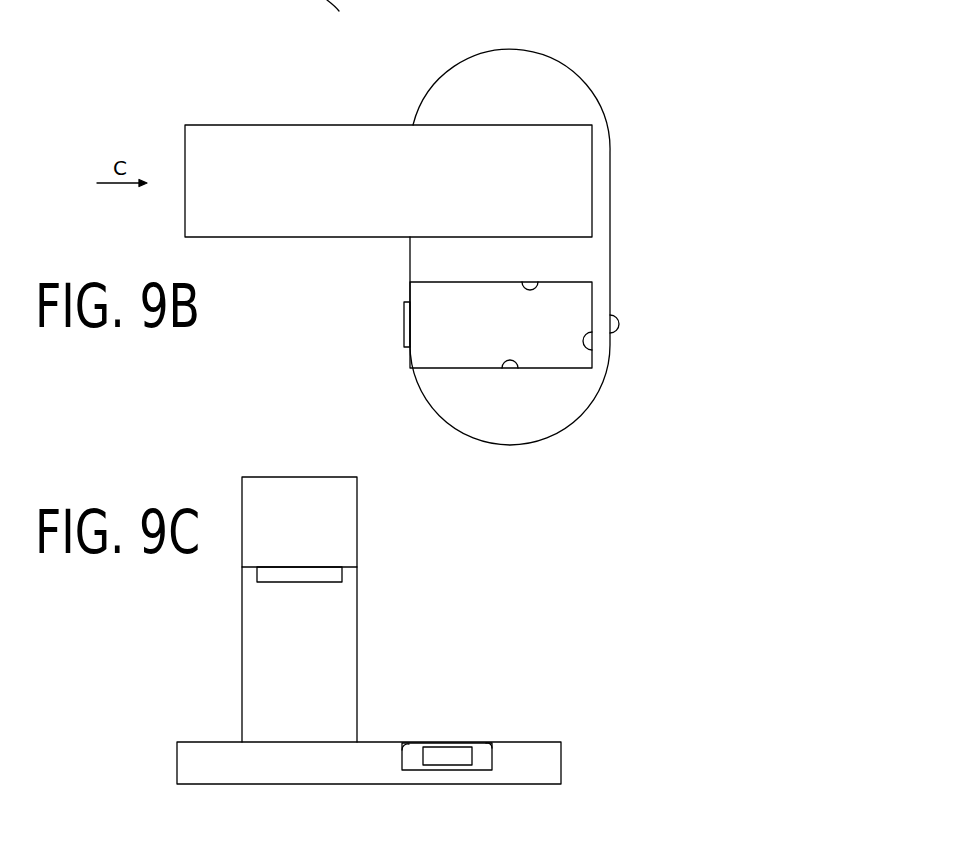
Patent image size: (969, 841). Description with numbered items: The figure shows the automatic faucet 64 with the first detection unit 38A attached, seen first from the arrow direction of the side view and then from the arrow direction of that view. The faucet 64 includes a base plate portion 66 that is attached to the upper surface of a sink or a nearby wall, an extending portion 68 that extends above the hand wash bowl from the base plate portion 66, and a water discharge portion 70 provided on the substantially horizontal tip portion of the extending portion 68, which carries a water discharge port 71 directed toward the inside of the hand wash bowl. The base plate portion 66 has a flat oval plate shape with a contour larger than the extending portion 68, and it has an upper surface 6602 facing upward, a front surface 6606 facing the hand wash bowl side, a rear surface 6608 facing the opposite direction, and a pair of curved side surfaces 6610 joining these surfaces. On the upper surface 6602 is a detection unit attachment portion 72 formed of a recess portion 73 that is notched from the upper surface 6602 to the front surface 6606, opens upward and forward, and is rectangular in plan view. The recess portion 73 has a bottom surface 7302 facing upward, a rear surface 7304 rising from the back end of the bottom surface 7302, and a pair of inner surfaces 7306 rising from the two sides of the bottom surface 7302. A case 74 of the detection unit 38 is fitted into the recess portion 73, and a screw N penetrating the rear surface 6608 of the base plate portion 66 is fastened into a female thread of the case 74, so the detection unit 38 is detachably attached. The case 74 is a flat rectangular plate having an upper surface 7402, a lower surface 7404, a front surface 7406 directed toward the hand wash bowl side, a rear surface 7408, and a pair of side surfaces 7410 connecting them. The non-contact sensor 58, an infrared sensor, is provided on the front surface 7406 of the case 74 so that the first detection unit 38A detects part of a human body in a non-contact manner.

In FIG. 9B, the detection unit 38 is at (599, 293).
In FIG. 9C, the detection unit 38 is at (511, 681).
In FIG. 9B, the first detection unit 38A is at (570, 290).
In FIG. 9C, the first detection unit 38A is at (488, 742).
In FIG. 9B, the non-contact sensor 58 is at (404, 338).
In FIG. 9C, the non-contact sensor 58 is at (450, 757).
In FIG. 9B, the faucet 64 is at (469, 115).
In FIG. 9C, the faucet 64 is at (366, 539).
In FIG. 9B, the base plate portion 66 is at (578, 91).
In FIG. 9C, the base plate portion 66 is at (547, 742).
In FIG. 9B, the extending portion 68 is at (538, 125).
In FIG. 9C, the extending portion 68 is at (242, 605).
In FIG. 9B, the water discharge portion 70 is at (255, 142).
In FIG. 9C, the water discharge portion 70 is at (297, 478).
In FIG. 9C, the water discharge port 71 is at (293, 583).
In FIG. 9B, the detection unit attachment portion 72 is at (510, 244).
In FIG. 9C, the detection unit attachment portion 72 is at (428, 678).
In FIG. 9B, the recess portion 73 is at (493, 288).
In FIG. 9C, the recess portion 73 is at (409, 759).
In FIG. 9B, the case 74 is at (599, 293).
In FIG. 9C, the case 74 is at (511, 681).
In FIG. 9B, the screw N is at (620, 323).
In FIG. 9B, the upper surface 6602 is at (572, 404).
In FIG. 9C, the upper surface 6602 is at (525, 742).
In FIG. 9B, the front surface 6606 is at (410, 258).
In FIG. 9C, the front surface 6606 is at (325, 762).
In FIG. 9B, the rear surface 6608 is at (612, 277).
In FIG. 9B, the side surfaces 6610 is at (510, 52).
In FIG. 9C, the side surfaces 6610 is at (177, 763).
In FIG. 9C, the bottom surface 7302 is at (490, 761).
In FIG. 9B, the rear surface 7304 is at (592, 348).
In FIG. 9B, the inner surfaces 7306 is at (537, 282).
In FIG. 9C, the inner surfaces 7306 is at (407, 743).
In FIG. 9B, the upper surface 7402 is at (473, 358).
In FIG. 9C, the upper surface 7402 is at (469, 734).
In FIG. 9C, the lower surface 7404 is at (430, 770).
In FIG. 9B, the front surface 7406 is at (404, 313).
In FIG. 9C, the front surface 7406 is at (413, 768).
In FIG. 9B, the rear surface 7408 is at (592, 302).
In FIG. 9B, the side surfaces 7410 is at (443, 282).
In FIG. 9C, the side surfaces 7410 is at (493, 750).